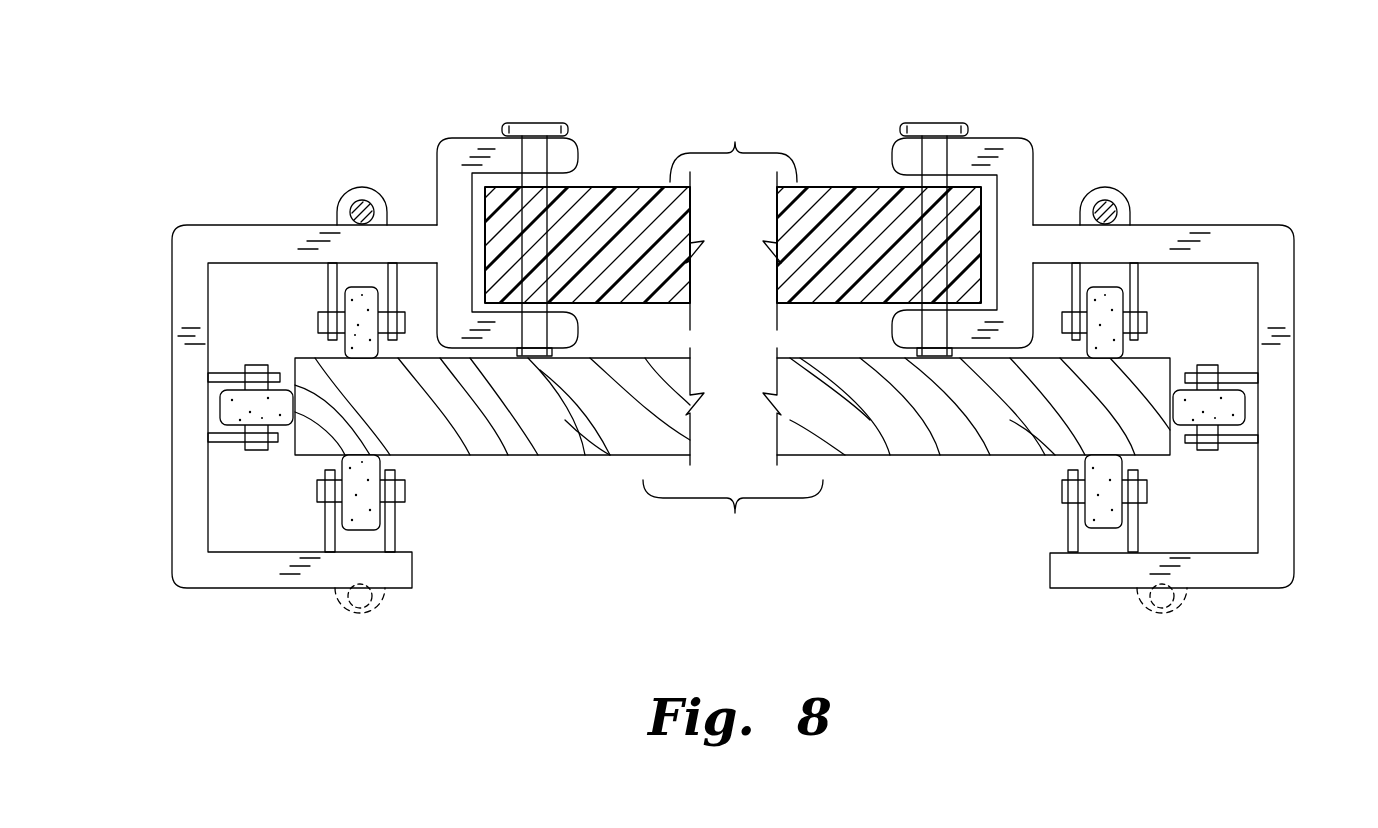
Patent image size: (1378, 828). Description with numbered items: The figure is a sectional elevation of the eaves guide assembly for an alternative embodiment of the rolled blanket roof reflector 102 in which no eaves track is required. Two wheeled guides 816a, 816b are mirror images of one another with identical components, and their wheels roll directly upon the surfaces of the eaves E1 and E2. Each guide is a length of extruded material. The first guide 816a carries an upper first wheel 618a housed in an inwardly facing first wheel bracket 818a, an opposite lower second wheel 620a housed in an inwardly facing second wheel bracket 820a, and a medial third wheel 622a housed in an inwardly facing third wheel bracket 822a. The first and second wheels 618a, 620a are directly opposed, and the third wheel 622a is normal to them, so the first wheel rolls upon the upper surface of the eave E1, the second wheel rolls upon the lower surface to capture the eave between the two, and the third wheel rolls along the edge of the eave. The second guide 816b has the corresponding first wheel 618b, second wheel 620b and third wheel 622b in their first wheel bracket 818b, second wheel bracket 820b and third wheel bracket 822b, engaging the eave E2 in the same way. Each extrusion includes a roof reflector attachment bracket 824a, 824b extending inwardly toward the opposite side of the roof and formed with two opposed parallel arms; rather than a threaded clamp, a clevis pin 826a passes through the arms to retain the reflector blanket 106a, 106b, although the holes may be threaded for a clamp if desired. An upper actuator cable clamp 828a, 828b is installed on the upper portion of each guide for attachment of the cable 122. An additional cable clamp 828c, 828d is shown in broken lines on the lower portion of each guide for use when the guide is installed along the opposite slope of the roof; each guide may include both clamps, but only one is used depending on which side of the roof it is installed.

The rolled blanket roof reflector 102 is at (733, 314).
The roof reflector blanket 106a is at (510, 307).
The roof reflector blanket 106b is at (970, 307).
The cable 122 is at (368, 205).
The first wheel 618a is at (345, 292).
The first wheel 618b is at (1125, 292).
The second wheel 620a is at (350, 528).
The second wheel 620b is at (1138, 527).
The third wheel 622a is at (220, 396).
The third wheel 622b is at (1245, 395).
The wheeled guide 816a is at (172, 590).
The wheeled guide 816b is at (1290, 590).
The first wheel bracket 818a is at (328, 335).
The first wheel bracket 818b is at (1138, 340).
The second wheel bracket 820a is at (325, 472).
The second wheel bracket 820b is at (1148, 472).
The third wheel bracket 822a is at (208, 436).
The third wheel bracket 822b is at (1240, 444).
The roof reflector attachment bracket 824a is at (447, 137).
The roof reflector attachment bracket 824b is at (1030, 138).
The clevis pin 826a is at (547, 123).
The upper actuator cable clamp 828a is at (340, 193).
The upper actuator cable clamp 828b is at (1110, 190).
The cable clamp 828c is at (338, 618).
The cable clamp 828d is at (1150, 628).
The eave E1 is at (437, 455).
The eave E2 is at (1010, 455).